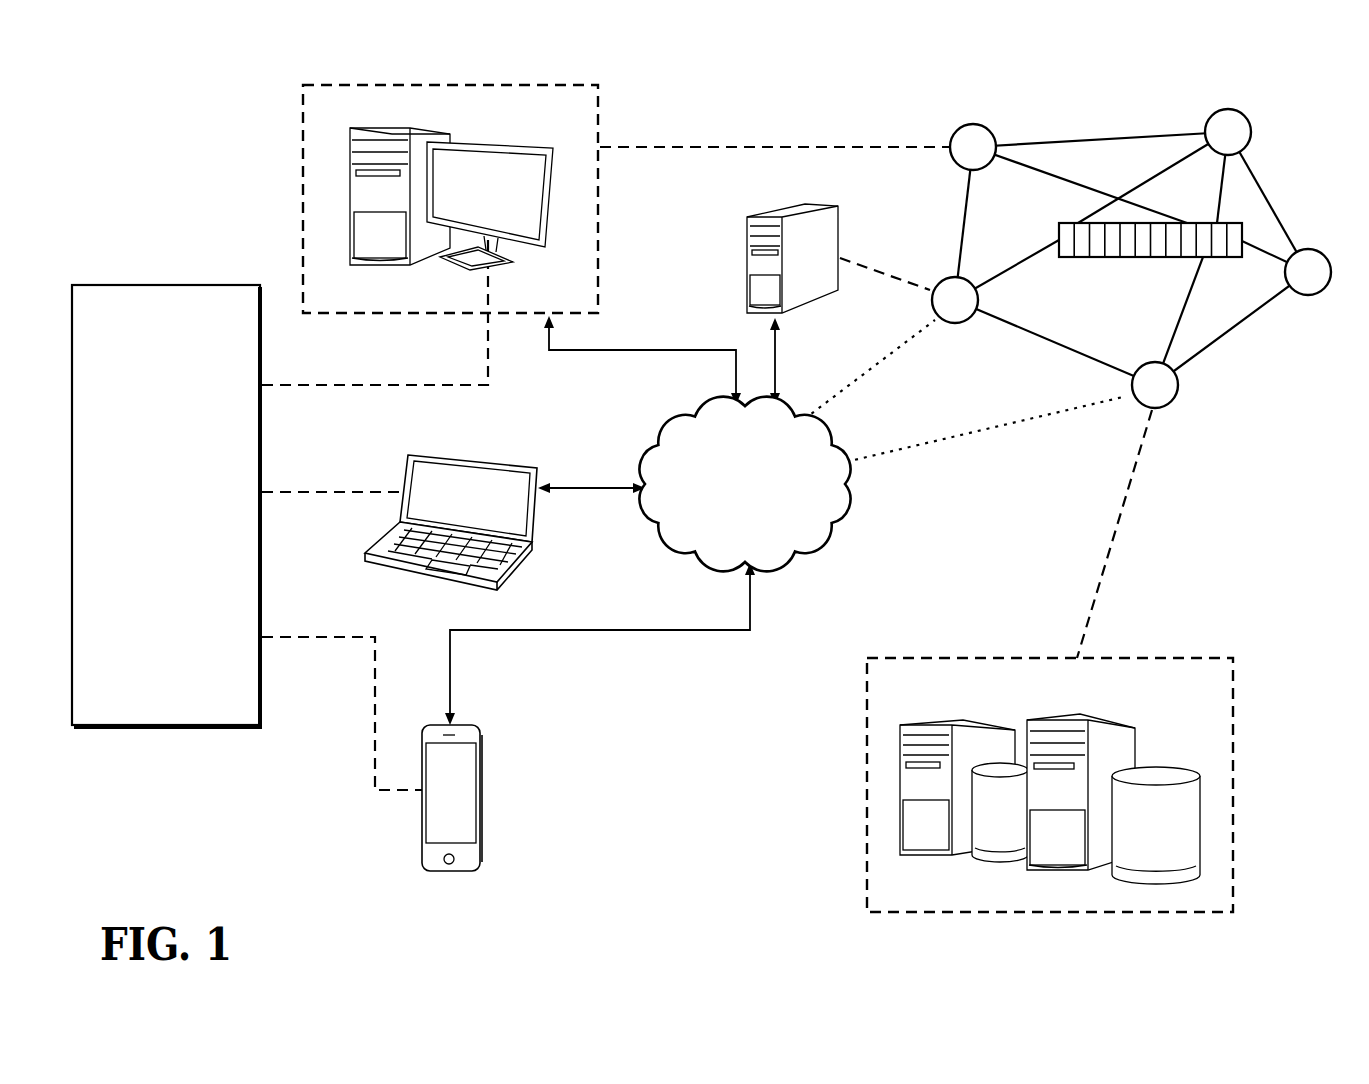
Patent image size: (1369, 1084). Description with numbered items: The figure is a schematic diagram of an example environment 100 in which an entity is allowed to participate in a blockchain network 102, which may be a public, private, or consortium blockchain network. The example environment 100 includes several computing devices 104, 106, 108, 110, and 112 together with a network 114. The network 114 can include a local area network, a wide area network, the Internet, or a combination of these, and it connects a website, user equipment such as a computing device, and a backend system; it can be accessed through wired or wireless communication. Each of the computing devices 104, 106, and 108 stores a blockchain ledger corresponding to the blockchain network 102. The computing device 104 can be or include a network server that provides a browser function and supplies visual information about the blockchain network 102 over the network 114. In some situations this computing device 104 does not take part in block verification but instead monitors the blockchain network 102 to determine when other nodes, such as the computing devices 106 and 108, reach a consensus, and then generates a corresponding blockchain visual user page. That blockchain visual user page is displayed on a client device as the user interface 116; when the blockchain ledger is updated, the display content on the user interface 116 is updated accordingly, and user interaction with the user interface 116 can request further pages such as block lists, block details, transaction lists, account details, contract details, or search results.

The example environment 100 is at (138, 131).
The blockchain network 102 is at (1138, 92).
The computing device 104 is at (867, 855).
The computing device 106 is at (830, 227).
The computing device 108 is at (600, 258).
The computing device 110 is at (520, 462).
The computing device 112 is at (486, 800).
The network 114 is at (836, 523).
The user interface 116 is at (106, 292).